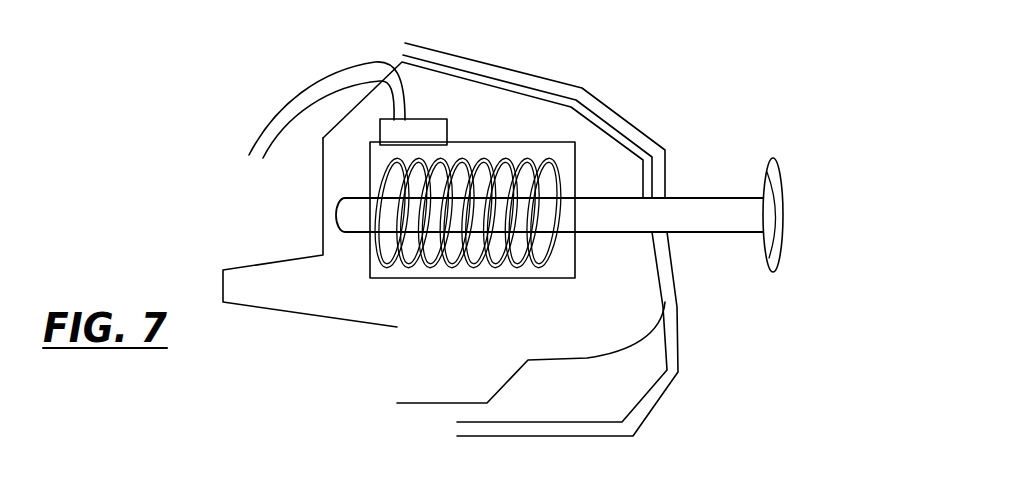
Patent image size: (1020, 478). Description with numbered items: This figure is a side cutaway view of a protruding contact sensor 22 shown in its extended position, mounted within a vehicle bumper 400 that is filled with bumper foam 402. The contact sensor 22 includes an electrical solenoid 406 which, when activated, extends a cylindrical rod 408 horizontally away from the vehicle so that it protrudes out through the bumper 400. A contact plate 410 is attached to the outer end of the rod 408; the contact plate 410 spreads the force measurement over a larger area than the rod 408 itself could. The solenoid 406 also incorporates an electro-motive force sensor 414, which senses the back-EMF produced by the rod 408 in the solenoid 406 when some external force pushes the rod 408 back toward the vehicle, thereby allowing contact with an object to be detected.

The protruding contact sensor 22 is at (442, 100).
The bumper 400 is at (680, 344).
The bumper foam 402 is at (505, 384).
The electrical solenoid 406 is at (430, 267).
The cylindrical rod 408 is at (603, 235).
The contact plate 410 is at (765, 186).
The electro-motive force (EMF) sensor 414 is at (390, 133).